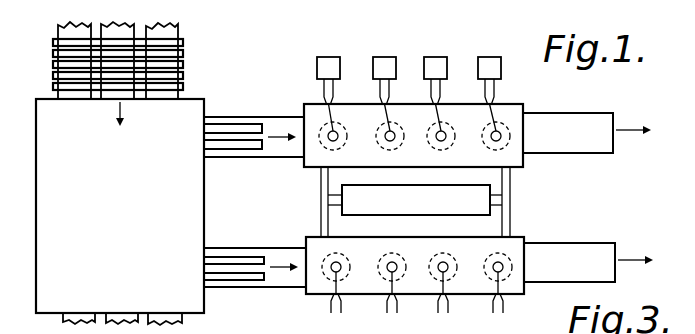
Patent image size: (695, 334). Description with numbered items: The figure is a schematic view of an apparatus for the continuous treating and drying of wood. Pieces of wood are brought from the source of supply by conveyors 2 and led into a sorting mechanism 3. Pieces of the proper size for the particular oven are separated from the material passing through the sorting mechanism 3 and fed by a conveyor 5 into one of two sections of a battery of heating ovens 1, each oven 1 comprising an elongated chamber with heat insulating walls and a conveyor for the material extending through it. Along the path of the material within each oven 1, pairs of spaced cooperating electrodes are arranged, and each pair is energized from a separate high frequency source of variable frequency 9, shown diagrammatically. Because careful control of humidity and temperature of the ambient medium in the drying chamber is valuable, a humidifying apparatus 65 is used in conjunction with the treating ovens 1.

The heating oven 1 is at (406, 165).
The conveyors 2 is at (115, 31).
The sorting mechanism 3 is at (110, 271).
The conveyor 5 is at (283, 157).
The high frequency source of variable frequency 9 is at (330, 63).
The humidifying apparatus 65 is at (432, 215).